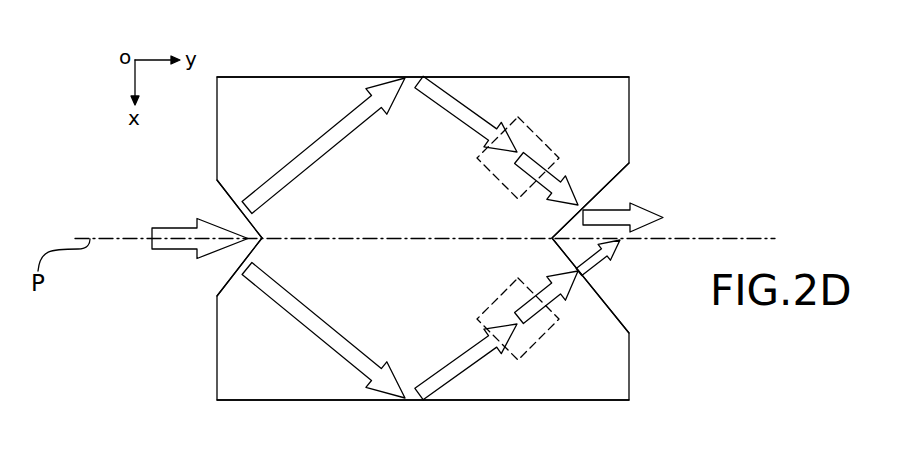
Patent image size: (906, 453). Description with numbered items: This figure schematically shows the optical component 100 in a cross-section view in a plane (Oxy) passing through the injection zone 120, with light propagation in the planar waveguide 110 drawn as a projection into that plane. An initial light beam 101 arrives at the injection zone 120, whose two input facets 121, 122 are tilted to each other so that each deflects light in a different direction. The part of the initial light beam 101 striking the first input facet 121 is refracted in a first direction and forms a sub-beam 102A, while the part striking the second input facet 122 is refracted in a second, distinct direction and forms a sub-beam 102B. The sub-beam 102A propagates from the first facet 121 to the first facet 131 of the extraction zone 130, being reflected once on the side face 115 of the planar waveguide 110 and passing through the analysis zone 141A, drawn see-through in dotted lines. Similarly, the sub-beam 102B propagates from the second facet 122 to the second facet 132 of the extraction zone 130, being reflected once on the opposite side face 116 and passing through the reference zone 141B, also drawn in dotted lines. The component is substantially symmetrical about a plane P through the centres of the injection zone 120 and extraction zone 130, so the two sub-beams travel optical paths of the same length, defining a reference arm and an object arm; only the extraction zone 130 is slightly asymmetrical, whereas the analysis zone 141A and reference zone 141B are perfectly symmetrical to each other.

The optical component 100 is at (288, 64).
The initial light beam 101 is at (168, 251).
The sub-beam 102A is at (308, 153).
The sub-beam 102B is at (292, 303).
The planar waveguide 110 is at (505, 85).
The side face 115 is at (385, 77).
The side face 116 is at (348, 400).
The injection zone 120 is at (193, 192).
The first input facet 121 is at (234, 201).
The second input facet 122 is at (231, 283).
The extraction zone 130 is at (679, 193).
The first facet of the extraction zone 131 is at (617, 171).
The second facet of the extraction zone 132 is at (613, 312).
The analysis zone 141A is at (537, 134).
The reference zone 141B is at (533, 328).